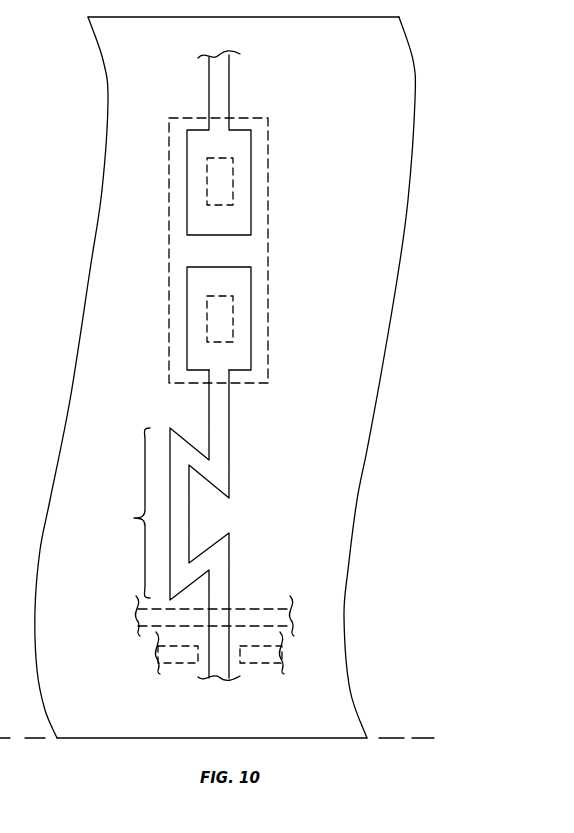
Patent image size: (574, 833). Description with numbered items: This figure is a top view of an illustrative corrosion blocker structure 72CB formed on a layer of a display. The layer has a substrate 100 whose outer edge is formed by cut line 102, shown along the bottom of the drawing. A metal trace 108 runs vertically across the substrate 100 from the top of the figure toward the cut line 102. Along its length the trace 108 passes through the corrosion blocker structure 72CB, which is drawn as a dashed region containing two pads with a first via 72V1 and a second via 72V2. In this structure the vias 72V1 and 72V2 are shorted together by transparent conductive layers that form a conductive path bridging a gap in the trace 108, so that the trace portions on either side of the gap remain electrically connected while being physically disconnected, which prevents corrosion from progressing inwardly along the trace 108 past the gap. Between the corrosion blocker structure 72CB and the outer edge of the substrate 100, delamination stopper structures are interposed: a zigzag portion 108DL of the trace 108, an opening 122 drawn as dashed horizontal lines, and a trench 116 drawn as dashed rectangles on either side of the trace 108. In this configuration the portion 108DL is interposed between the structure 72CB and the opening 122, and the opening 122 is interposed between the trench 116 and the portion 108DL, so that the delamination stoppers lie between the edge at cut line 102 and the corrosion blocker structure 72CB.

The substrate 100 is at (360, 500).
The cut line 102 is at (422, 735).
The metal trace 108 is at (221, 93).
The portion of trace 108DL is at (112, 513).
The corrosion blocker structure 72CB is at (268, 192).
The via 72V1 is at (207, 322).
The via 72V2 is at (207, 181).
The trench 116 is at (283, 657).
The opening 122 is at (262, 608).